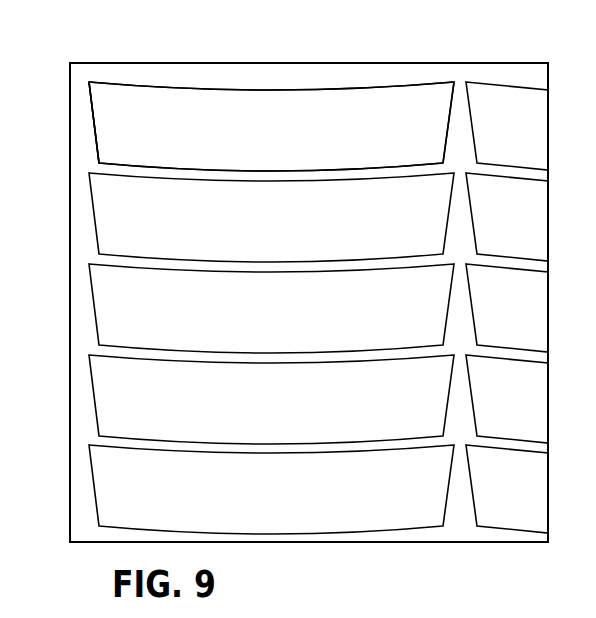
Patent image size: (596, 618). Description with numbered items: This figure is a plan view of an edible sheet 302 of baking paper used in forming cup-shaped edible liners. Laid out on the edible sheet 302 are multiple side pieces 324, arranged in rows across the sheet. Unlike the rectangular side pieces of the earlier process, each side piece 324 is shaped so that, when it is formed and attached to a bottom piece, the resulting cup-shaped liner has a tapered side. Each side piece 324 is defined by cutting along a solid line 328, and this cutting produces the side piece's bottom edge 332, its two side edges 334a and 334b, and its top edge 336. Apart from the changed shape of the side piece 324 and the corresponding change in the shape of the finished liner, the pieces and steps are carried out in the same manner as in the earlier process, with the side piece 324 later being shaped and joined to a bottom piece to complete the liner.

The edible sheet 302 is at (517, 46).
The side piece 324 is at (274, 149).
The solid line 328 is at (99, 163).
The bottom edge 332 is at (173, 174).
The side edge 334a is at (94, 116).
The side edge 334b is at (455, 111).
The top edge 336 is at (217, 90).